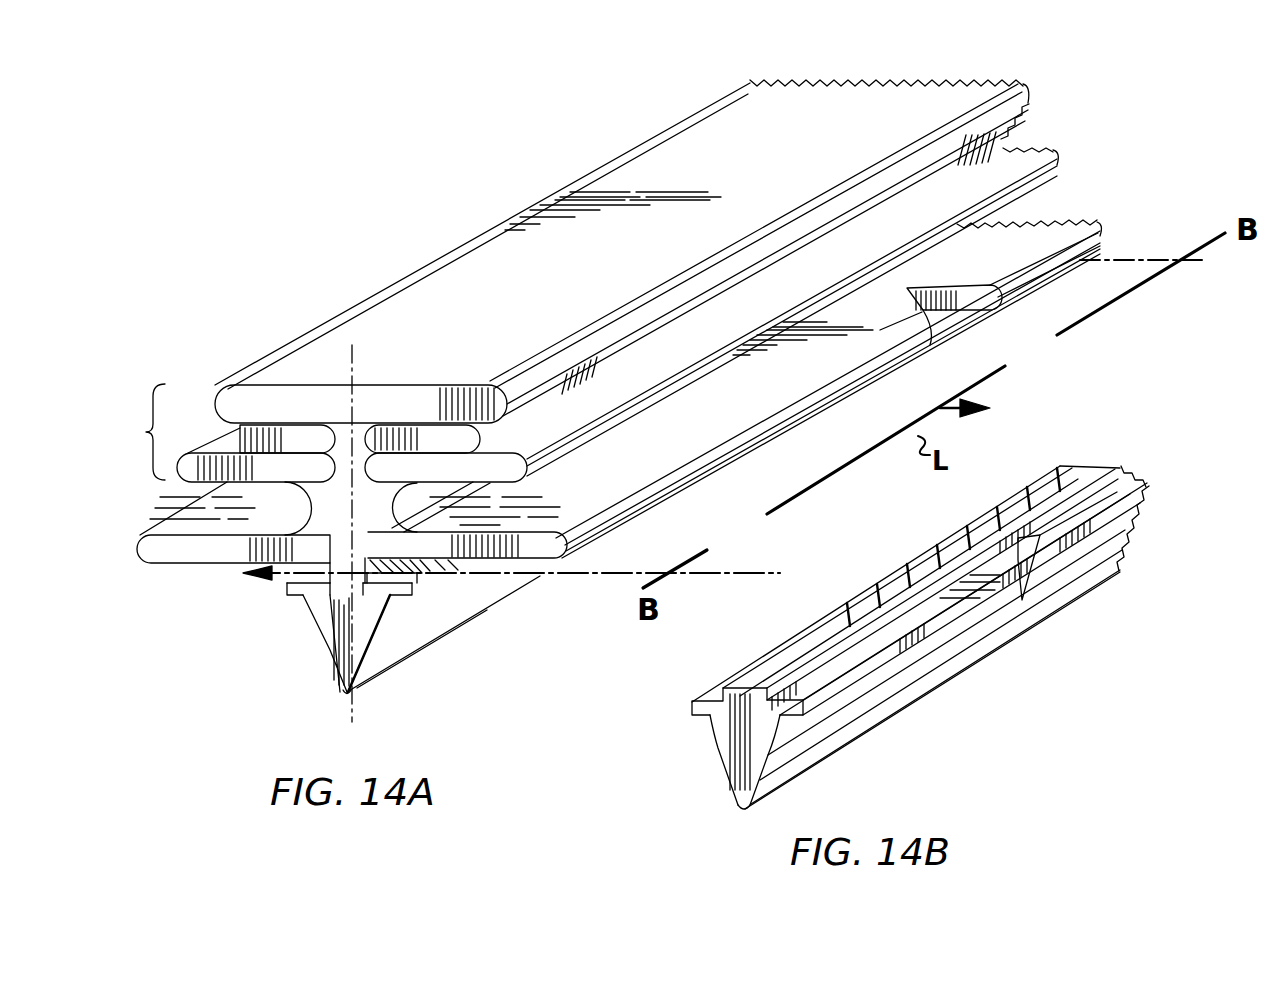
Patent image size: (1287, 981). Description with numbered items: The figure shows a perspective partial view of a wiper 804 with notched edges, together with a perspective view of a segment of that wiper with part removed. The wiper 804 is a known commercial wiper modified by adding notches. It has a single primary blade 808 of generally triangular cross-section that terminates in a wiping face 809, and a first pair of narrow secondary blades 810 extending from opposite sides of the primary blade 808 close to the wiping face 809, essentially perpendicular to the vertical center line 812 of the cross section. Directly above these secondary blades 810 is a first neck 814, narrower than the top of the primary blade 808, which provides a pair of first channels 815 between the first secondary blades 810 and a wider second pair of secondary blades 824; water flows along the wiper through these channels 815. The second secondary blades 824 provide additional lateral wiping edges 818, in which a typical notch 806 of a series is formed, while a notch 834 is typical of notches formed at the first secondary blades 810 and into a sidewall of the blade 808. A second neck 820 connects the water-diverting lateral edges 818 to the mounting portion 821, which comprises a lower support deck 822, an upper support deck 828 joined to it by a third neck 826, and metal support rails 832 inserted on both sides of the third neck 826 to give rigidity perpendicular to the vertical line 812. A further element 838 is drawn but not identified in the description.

In FIG. 14A, the wiper 804 is at (685, 515).
In FIG. 14A, the notch 806 is at (963, 305).
In FIG. 14A, the primary blade 808 is at (325, 640).
In FIG. 14B, the primary blade 808 is at (716, 740).
In FIG. 14A, the wiping face 809 is at (347, 700).
In FIG. 14B, the wiping face 809 is at (745, 812).
In FIG. 14A, the first pair of secondary blades 810 is at (318, 612).
In FIG. 14B, the first pair of secondary blades 810 is at (692, 708).
In FIG. 14A, the vertical center line 812 is at (352, 706).
In FIG. 14A, the first neck 814 is at (346, 574).
In FIG. 14B, the first neck 814 is at (788, 660).
In FIG. 14A, the first channels 815 is at (297, 581).
In FIG. 14A, the lateral wiping edges 818 is at (140, 548).
In FIG. 14A, the second neck 820 is at (268, 570).
In FIG. 14A, the mounting portion 821 is at (125, 432).
In FIG. 14A, the lower support deck 822 is at (178, 470).
In FIG. 14A, the second pair of secondary blades 824 is at (283, 523).
In FIG. 14A, the third neck 826 is at (385, 424).
In FIG. 14A, the upper support deck 828 is at (222, 385).
In FIG. 14A, the support rails 832 is at (302, 440).
In FIG. 14B, the notch 834 is at (1040, 572).
In FIG. 14B, the web side face 838 is at (837, 723).